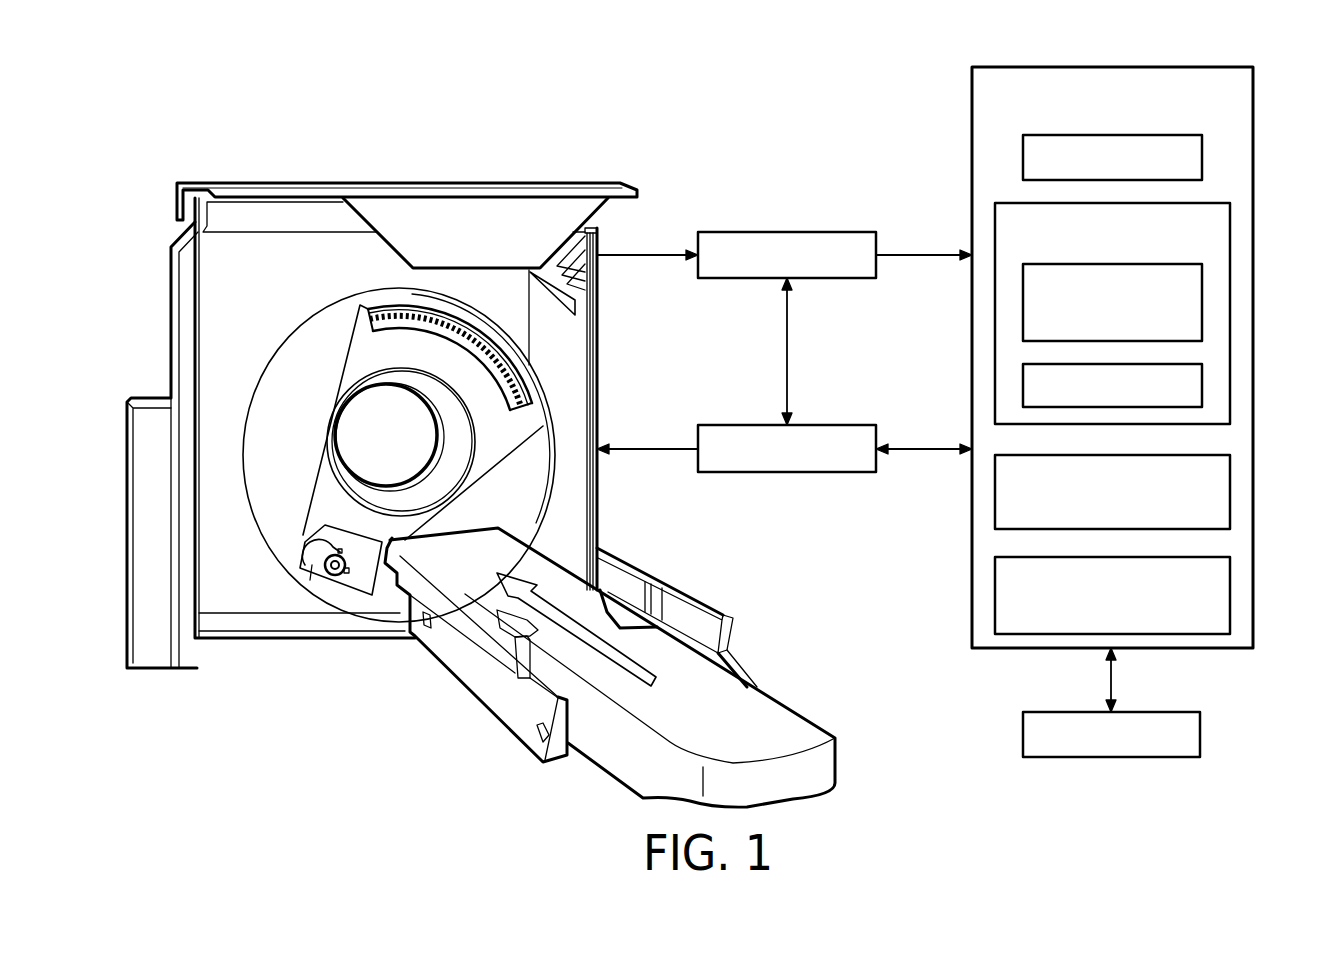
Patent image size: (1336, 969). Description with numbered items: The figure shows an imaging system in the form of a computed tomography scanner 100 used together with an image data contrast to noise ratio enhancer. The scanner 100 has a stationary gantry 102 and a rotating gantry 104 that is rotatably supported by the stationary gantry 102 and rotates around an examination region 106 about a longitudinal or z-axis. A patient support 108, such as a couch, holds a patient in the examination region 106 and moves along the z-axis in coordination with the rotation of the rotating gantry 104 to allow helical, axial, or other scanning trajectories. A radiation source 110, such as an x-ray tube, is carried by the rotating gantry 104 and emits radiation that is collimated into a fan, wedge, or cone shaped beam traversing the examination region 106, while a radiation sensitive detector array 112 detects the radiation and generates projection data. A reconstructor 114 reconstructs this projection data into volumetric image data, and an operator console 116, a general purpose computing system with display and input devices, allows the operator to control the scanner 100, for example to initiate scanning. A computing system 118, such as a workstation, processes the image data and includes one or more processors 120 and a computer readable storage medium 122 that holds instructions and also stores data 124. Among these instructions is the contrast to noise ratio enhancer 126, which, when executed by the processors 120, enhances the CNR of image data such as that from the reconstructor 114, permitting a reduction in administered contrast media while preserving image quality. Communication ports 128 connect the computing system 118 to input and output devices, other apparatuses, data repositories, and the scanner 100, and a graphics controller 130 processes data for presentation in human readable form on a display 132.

The computed tomography scanner 100 is at (130, 134).
The stationary gantry 102 is at (179, 287).
The rotating gantry 104 is at (356, 347).
The examination region 106 is at (409, 450).
The patient support 108 is at (718, 728).
The radiation source 110 is at (332, 580).
The radiation sensitive detector array 112 is at (467, 333).
The reconstructor 114 is at (718, 279).
The operator console 116 is at (718, 473).
The computing system 118 is at (972, 99).
The processors 120 is at (1202, 162).
The computer readable storage medium 122 is at (1230, 240).
The data 124 is at (1202, 388).
The contrast to noise ratio enhancer 126 is at (1202, 302).
The communication ports 128 is at (1230, 492).
The graphics controller 130 is at (1230, 594).
The display 132 is at (1200, 738).